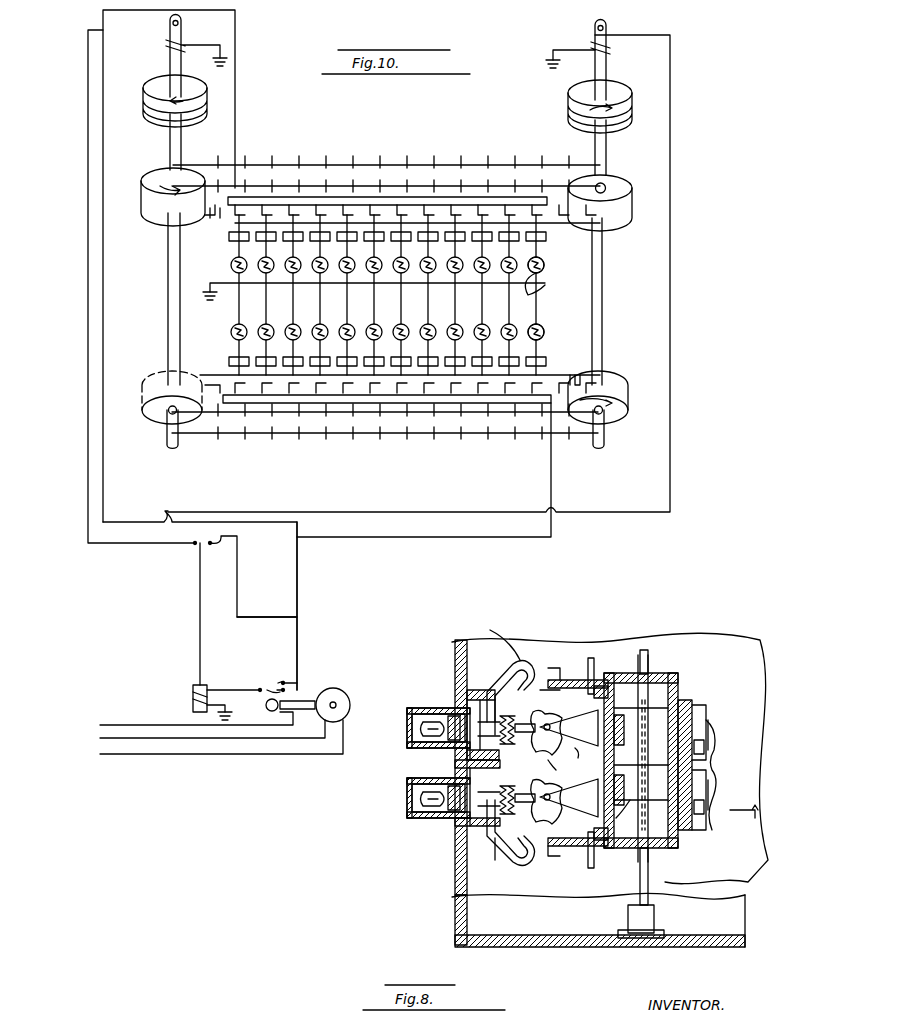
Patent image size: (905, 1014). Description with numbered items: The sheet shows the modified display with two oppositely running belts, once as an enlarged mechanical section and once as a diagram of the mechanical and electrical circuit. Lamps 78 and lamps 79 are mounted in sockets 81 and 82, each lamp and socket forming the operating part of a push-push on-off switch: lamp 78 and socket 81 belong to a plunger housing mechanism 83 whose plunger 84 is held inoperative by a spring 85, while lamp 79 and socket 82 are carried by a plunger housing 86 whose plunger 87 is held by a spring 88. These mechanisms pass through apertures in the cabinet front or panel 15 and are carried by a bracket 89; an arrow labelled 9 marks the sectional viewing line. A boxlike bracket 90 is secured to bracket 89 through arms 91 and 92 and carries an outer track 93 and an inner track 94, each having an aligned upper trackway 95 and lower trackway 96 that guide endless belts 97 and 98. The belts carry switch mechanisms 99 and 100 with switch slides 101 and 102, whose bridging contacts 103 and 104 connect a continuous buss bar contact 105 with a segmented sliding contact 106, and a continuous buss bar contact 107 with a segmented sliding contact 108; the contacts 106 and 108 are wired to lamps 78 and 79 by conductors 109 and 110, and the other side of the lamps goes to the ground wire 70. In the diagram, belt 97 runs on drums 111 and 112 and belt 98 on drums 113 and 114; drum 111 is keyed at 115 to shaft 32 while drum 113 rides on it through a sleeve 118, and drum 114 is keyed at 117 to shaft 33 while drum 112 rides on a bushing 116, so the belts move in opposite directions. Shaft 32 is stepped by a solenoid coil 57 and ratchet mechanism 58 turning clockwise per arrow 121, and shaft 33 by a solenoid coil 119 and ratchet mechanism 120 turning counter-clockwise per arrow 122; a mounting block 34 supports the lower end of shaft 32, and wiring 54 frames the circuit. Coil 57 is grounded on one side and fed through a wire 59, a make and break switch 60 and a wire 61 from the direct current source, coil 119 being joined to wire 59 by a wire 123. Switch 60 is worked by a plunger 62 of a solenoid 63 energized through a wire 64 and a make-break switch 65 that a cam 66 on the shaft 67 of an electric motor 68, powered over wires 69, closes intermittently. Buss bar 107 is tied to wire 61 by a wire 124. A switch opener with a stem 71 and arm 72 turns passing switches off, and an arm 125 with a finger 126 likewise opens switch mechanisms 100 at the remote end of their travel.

In FIG. 8, the section line 9 is at (744, 819).
In FIG. 8, the cabinet front or panel 15 is at (455, 893).
In FIG. 10, the shaft 32 is at (165, 326).
In FIG. 8, the shaft 32 is at (649, 876).
In FIG. 10, the shaft 33 is at (603, 280).
In FIG. 8, the base block 34 is at (655, 917).
In FIG. 10, the frame line 54 is at (236, 96).
In FIG. 10, the solenoid coil 57 is at (183, 40).
In FIG. 10, the ratchet mechanism 58 is at (160, 80).
In FIG. 10, the wire 59 is at (142, 300).
In FIG. 10, the make and break switch 60 is at (218, 546).
In FIG. 10, the wire 61 is at (284, 617).
In FIG. 10, the plunger 62 is at (200, 643).
In FIG. 10, the solenoid 63 is at (190, 685).
In FIG. 10, the wire 64 is at (232, 690).
In FIG. 10, the make-break switch 65 is at (270, 680).
In FIG. 10, the cam 66 is at (266, 712).
In FIG. 10, the shaft 67 is at (298, 700).
In FIG. 10, the electric motor 68 is at (340, 698).
In FIG. 10, the wires 69 is at (283, 756).
In FIG. 10, the ground wire 70 is at (361, 283).
In FIG. 10, the stem 71 is at (200, 240).
In FIG. 10, the arm 72 is at (215, 222).
In FIG. 10, the lamps 78 is at (542, 262).
In FIG. 8, the lamps 78 is at (420, 710).
In FIG. 10, the lamps 79 is at (540, 328).
In FIG. 8, the lamps 79 is at (414, 818).
In FIG. 8, the socket 81 is at (432, 708).
In FIG. 8, the socket 82 is at (440, 820).
In FIG. 8, the plunger housing mechanism 83 is at (476, 712).
In FIG. 8, the plunger 84 is at (528, 722).
In FIG. 8, the spring 85 is at (508, 746).
In FIG. 8, the plunger housing 86 is at (458, 826).
In FIG. 8, the plunger 87 is at (514, 790).
In FIG. 8, the spring 88 is at (493, 764).
In FIG. 8, the bracket 89 is at (490, 690).
In FIG. 8, the boxlike bracket 90 is at (660, 673).
In FIG. 8, the arm 91 is at (560, 672).
In FIG. 8, the arm 92 is at (524, 862).
In FIG. 8, the track 93 is at (650, 758).
In FIG. 8, the track 94 is at (708, 770).
In FIG. 8, the upper trackway 95 is at (686, 708).
In FIG. 8, the lower trackway 96 is at (705, 850).
In FIG. 10, the endless belt 97 is at (340, 165).
In FIG. 8, the endless belt 97 is at (700, 710).
In FIG. 10, the endless belt 98 is at (312, 438).
In FIG. 8, the endless belt 98 is at (742, 840).
In FIG. 10, the switch mechanism 99 is at (445, 200).
In FIG. 8, the switch mechanism 99 is at (564, 732).
In FIG. 10, the switch mechanism 100 is at (388, 403).
In FIG. 8, the switch mechanism 100 is at (564, 801).
In FIG. 8, the switch slide 101 is at (583, 756).
In FIG. 8, the switch slide 102 is at (551, 761).
In FIG. 8, the bridging contact 103 is at (615, 672).
In FIG. 8, the bridging contact 104 is at (594, 855).
In FIG. 10, the continuous buss bar contact 105 is at (522, 195).
In FIG. 8, the continuous buss bar contact 105 is at (600, 688).
In FIG. 10, the segmented bar or individual sliding contact 106 is at (535, 292).
In FIG. 8, the segmented bar or individual sliding contact 106 is at (586, 682).
In FIG. 10, the continuous buss bar contact 107 is at (222, 405).
In FIG. 8, the continuous buss bar contact 107 is at (606, 843).
In FIG. 10, the segmented bar or individual sliding contact 108 is at (228, 360).
In FIG. 8, the segmented bar or individual sliding contact 108 is at (570, 850).
In FIG. 8, the wire or conductor 109 is at (498, 636).
In FIG. 8, the wire or conductor 110 is at (495, 842).
In FIG. 10, the drum 111 is at (156, 165).
In FIG. 10, the drum 112 is at (628, 185).
In FIG. 10, the drum 113 is at (150, 432).
In FIG. 10, the drum 114 is at (618, 412).
In FIG. 10, the key 115 is at (173, 181).
In FIG. 10, the bushing 116 is at (606, 172).
In FIG. 10, the key 117 is at (605, 408).
In FIG. 10, the bushing or sleeve 118 is at (165, 408).
In FIG. 10, the solenoid coil 119 is at (602, 47).
In FIG. 10, the ratchet mechanism 120 is at (620, 92).
In FIG. 10, the arrow 121 is at (188, 112).
In FIG. 10, the arrow 122 is at (592, 120).
In FIG. 10, the wire 123 is at (672, 300).
In FIG. 10, the wire 124 is at (553, 473).
In FIG. 10, the arm 125 is at (580, 373).
In FIG. 10, the finger 126 is at (570, 375).